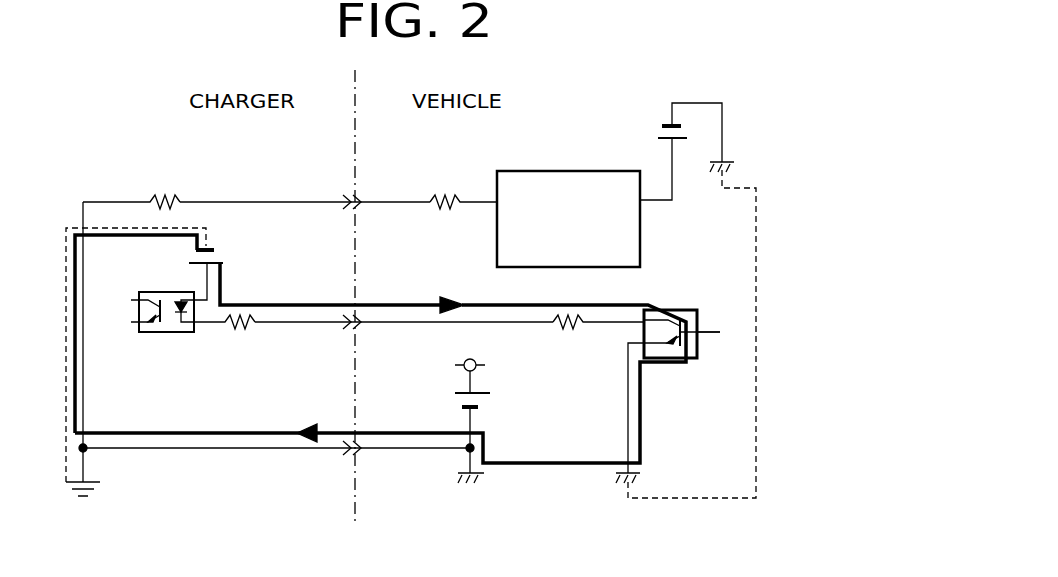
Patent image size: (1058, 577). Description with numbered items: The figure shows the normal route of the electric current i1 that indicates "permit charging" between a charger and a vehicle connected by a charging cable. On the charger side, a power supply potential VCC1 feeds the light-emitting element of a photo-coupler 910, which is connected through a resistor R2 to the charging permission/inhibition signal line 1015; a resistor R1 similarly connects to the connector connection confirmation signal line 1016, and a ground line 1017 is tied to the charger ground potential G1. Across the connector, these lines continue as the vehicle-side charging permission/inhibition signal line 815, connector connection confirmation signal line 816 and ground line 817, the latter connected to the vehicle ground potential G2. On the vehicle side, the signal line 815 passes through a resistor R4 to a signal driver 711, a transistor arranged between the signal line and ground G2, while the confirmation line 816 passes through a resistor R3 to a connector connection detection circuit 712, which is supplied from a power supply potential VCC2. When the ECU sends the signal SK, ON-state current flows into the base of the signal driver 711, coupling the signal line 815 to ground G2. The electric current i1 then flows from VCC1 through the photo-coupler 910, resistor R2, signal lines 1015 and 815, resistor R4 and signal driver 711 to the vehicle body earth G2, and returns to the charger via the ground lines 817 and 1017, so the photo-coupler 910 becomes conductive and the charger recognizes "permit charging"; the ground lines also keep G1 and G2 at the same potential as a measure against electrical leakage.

The connector connection confirmation signal line 1016 is at (257, 200).
The connector connection confirmation signal line 816 is at (396, 200).
The connector connection detection circuit 712 is at (592, 268).
The signal driver 711 is at (678, 309).
The photo-coupler 910 is at (170, 333).
The charging permission/inhibition signal line 1015 is at (298, 328).
The charging permission/inhibition signal line 815 is at (393, 328).
The ground line 1017 is at (200, 455).
The ground line 817 is at (393, 455).
The resistor R1 is at (131, 191).
The resistor R2 is at (224, 332).
The resistor R3 is at (463, 191).
The resistor R4 is at (598, 333).
The power supply potential VCC1 is at (205, 278).
The power supply potential VCC2 is at (670, 152).
The ground potential G1 is at (98, 472).
The ground potential G2 is at (478, 412).
The signal SK is at (713, 323).
The electric current i1 is at (270, 429).